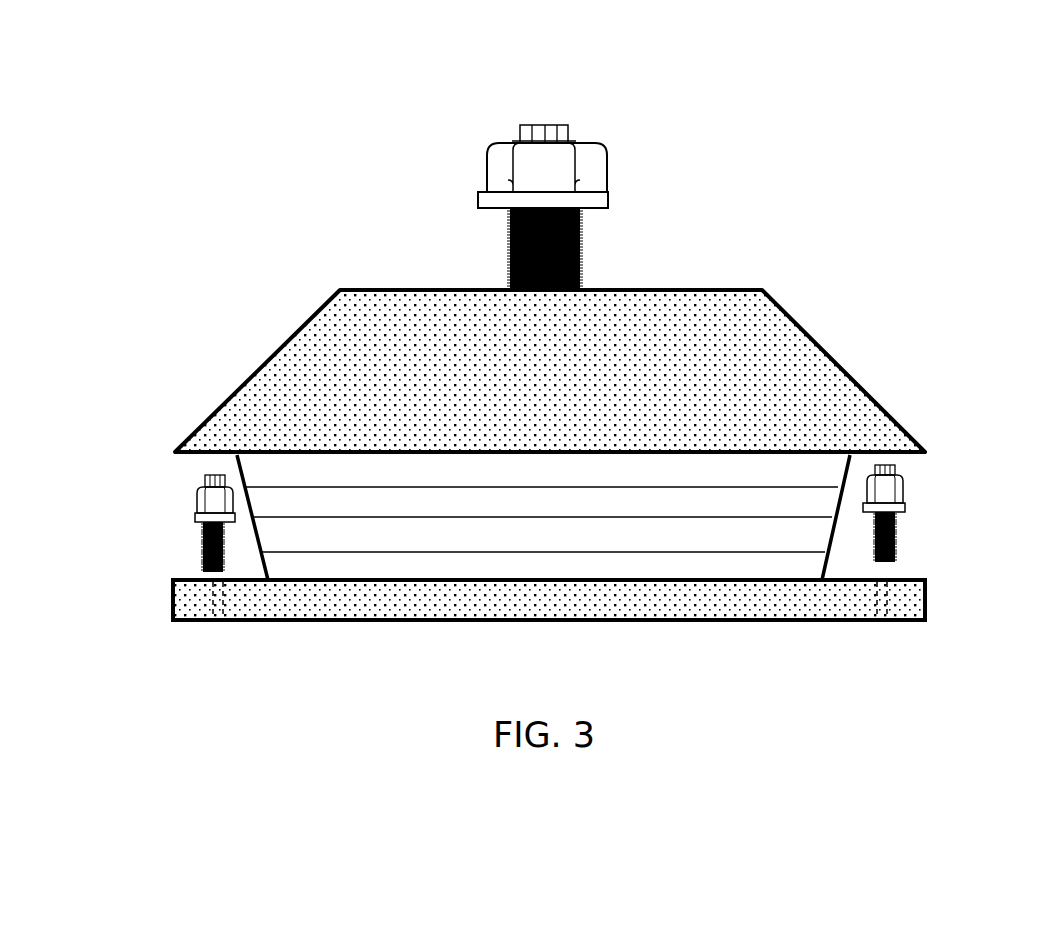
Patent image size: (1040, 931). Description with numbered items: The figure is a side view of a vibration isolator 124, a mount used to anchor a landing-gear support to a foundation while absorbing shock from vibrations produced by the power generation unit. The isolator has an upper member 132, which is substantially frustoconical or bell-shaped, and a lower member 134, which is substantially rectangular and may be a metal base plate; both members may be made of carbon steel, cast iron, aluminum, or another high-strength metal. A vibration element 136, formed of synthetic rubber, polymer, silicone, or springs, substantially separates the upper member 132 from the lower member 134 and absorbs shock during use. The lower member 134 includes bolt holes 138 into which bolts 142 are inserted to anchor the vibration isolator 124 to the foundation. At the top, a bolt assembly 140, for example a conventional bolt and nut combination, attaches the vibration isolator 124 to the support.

The vibration isolator 124 is at (797, 153).
The upper member 132 is at (808, 388).
The lower member 134 is at (912, 592).
The vibration element 136 is at (287, 497).
The bolt holes 138 is at (215, 607).
The bolt assembly 140 is at (592, 177).
The bolts 142 is at (898, 493).